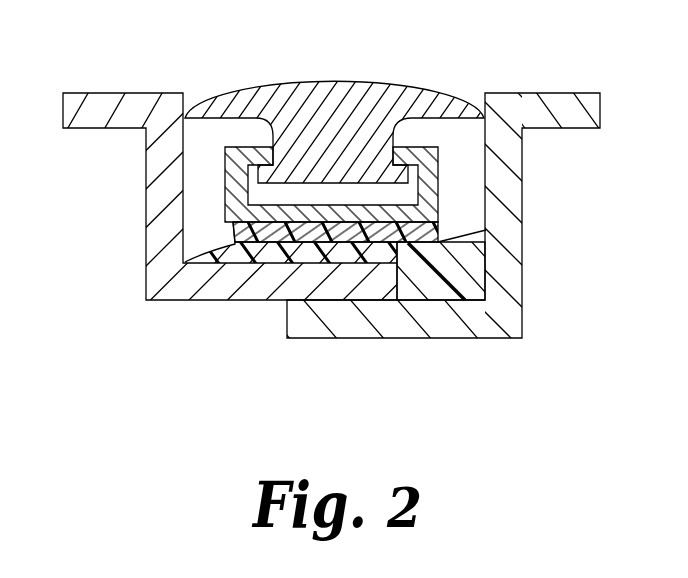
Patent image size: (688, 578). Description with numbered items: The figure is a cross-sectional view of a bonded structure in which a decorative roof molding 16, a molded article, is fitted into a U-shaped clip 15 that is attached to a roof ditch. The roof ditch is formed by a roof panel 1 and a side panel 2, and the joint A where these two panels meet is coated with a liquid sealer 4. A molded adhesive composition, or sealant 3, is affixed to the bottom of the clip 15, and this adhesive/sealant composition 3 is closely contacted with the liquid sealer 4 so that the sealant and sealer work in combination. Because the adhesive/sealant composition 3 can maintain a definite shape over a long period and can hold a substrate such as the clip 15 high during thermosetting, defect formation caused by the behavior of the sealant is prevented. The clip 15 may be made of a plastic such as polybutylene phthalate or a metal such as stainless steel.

The roof panel 1 is at (157, 242).
The side panel 2 is at (513, 283).
The adhesive composition (sealant) 3 is at (420, 236).
The liquid sealer 4 is at (473, 288).
The U-shaped clip 15 is at (435, 175).
The roof molding 16 is at (358, 96).
The joint A is at (406, 305).